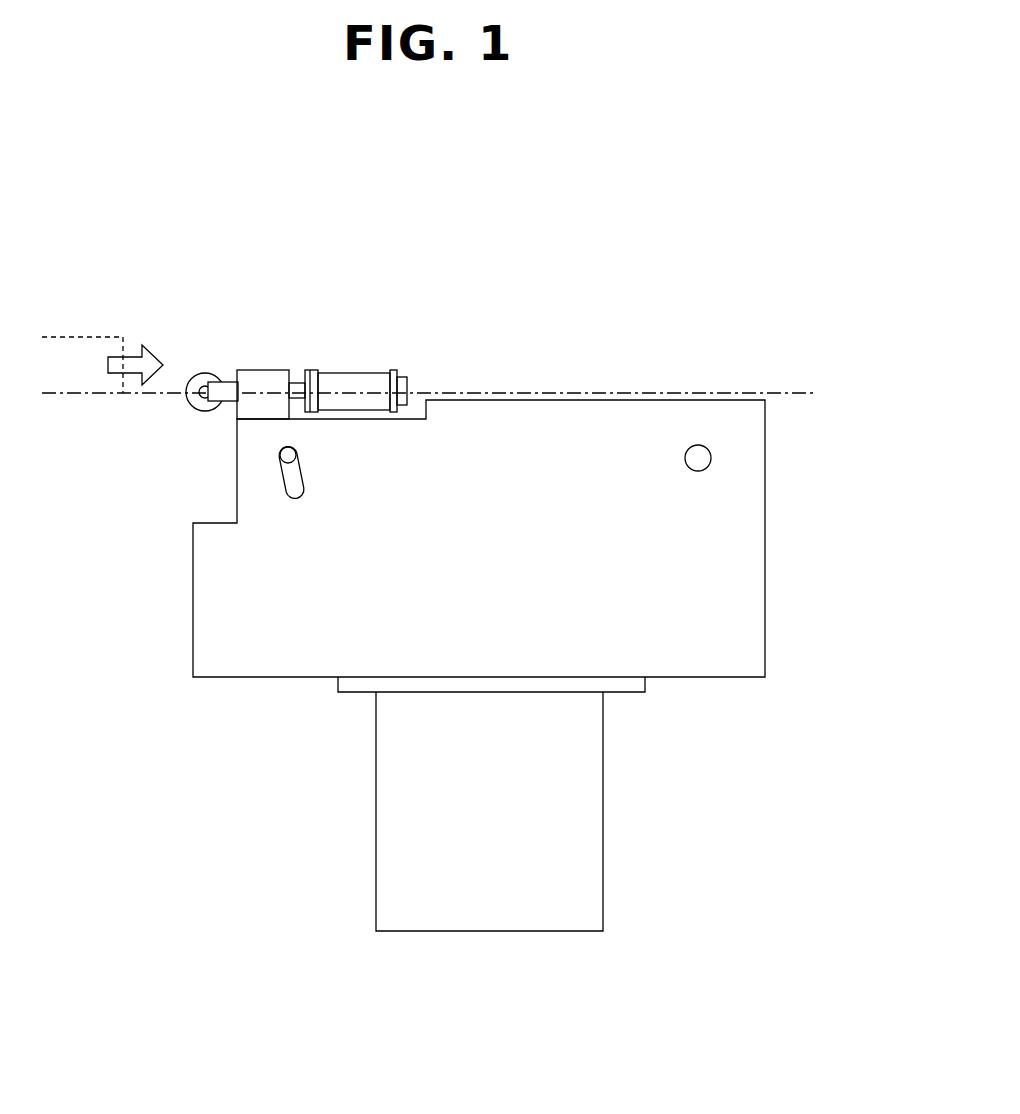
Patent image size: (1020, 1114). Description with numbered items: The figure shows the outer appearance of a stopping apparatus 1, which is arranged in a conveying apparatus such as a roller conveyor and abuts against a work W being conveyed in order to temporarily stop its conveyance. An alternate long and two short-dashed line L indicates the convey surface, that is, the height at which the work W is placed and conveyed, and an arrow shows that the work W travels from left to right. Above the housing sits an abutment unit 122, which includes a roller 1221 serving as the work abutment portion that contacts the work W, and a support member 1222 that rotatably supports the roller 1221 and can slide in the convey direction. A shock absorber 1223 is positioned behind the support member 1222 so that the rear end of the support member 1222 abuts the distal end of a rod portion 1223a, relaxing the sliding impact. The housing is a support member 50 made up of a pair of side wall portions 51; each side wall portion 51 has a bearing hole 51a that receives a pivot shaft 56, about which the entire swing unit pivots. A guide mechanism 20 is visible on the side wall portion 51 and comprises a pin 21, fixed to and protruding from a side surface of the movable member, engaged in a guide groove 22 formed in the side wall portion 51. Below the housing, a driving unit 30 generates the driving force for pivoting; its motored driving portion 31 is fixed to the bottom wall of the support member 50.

The stopping apparatus 1 is at (133, 173).
The work W is at (70, 330).
The convey surface line L is at (697, 392).
The abutment unit 122 is at (326, 352).
The roller 1221 is at (197, 372).
The support member 1222 is at (255, 370).
The shock absorber 1223 is at (360, 372).
The rod portion 1223a is at (297, 382).
The guide mechanism 20 is at (112, 492).
The pin 21 is at (279, 460).
The guide groove 22 is at (283, 492).
The driving unit 30 is at (316, 902).
The driving portion 31 is at (595, 877).
The support member 50 is at (702, 702).
The side wall portion 51 is at (255, 656).
The bearing hole 51a is at (685, 446).
The pivot shaft 56 is at (703, 456).